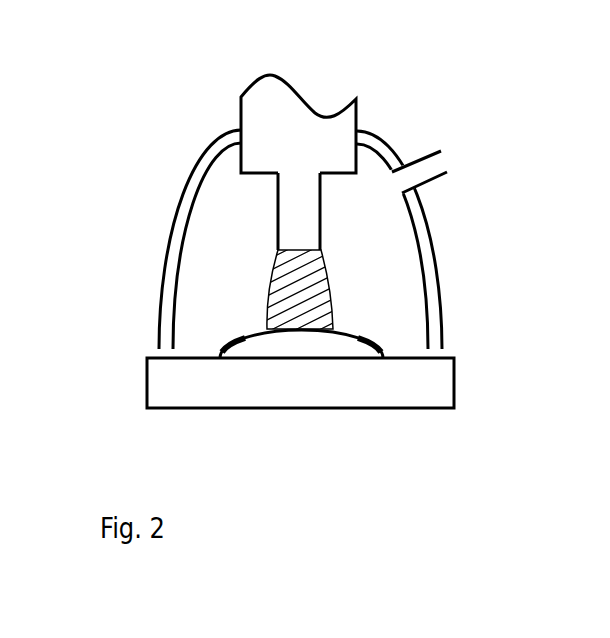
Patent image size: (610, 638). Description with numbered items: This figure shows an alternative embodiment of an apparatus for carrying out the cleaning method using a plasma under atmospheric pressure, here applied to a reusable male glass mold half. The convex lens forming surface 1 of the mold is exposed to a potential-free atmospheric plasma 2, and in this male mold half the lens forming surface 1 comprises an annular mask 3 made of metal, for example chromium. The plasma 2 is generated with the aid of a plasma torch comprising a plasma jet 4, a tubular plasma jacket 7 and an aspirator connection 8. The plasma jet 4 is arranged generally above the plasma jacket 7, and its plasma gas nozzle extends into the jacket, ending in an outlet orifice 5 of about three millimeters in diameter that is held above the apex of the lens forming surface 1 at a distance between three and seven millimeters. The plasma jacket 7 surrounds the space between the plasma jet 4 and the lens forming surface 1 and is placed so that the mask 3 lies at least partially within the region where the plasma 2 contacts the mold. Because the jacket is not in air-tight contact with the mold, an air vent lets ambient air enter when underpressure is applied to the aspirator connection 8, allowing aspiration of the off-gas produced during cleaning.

The lens forming surface 1 is at (258, 327).
The plasma 2 is at (318, 309).
The annular mask 3 is at (225, 345).
The plasma jet 4 is at (277, 119).
The plasma jet orifice 5 is at (287, 250).
The tubular plasma jacket 7 is at (427, 248).
The aspirator connection 8 is at (440, 165).